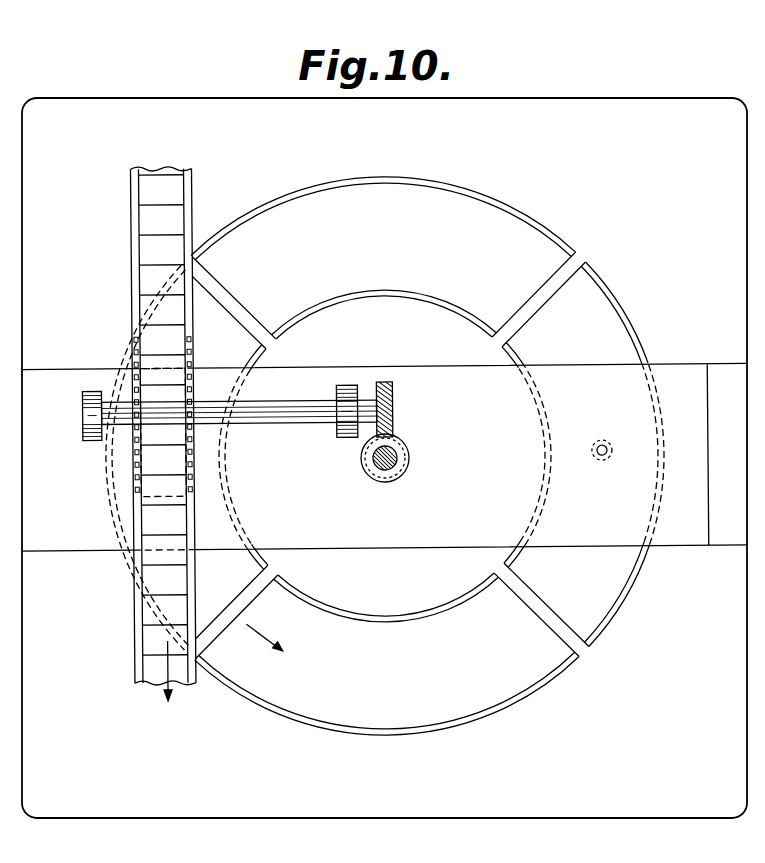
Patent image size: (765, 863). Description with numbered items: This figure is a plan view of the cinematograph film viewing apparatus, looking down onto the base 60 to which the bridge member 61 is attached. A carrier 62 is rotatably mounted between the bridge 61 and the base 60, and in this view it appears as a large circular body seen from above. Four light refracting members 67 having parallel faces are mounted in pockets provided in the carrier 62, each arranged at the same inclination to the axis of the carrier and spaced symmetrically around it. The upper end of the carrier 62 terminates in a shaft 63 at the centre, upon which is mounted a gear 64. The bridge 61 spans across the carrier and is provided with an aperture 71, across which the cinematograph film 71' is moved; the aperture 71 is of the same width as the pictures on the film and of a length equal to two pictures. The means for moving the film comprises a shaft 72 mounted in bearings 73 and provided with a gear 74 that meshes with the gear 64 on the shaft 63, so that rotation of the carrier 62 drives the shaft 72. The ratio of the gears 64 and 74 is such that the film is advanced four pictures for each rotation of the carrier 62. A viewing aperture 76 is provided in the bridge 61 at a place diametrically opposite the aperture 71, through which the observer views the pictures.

The base 60 is at (368, 807).
The bridge member 61 is at (675, 380).
The carrier 62 is at (403, 318).
The shaft 63 is at (393, 463).
The gear 64 is at (408, 450).
The light refracting members 67 is at (532, 253).
The aperture 71 is at (129, 441).
The film strip 71' is at (181, 434).
The shaft 72 is at (275, 417).
The bearings 73 is at (343, 385).
The gear 74 is at (392, 397).
The viewing aperture 76 is at (600, 447).